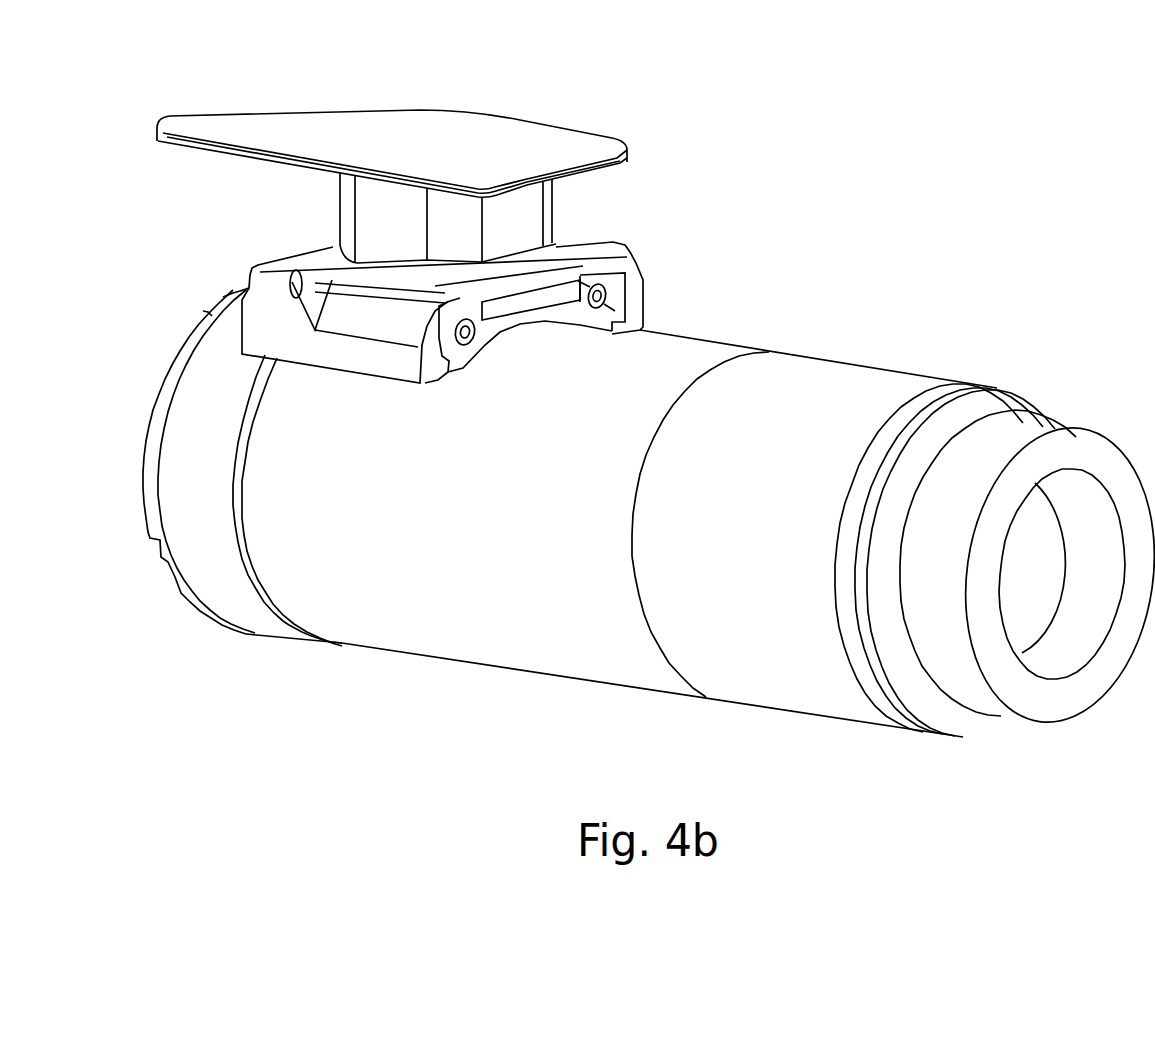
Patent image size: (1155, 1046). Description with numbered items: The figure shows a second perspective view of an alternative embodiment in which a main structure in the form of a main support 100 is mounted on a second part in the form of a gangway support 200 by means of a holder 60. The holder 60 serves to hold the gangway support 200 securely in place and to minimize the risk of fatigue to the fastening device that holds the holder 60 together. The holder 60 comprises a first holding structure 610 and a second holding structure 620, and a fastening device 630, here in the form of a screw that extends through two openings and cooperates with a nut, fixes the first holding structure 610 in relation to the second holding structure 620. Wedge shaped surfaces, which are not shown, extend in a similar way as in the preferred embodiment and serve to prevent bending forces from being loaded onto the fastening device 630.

The main support 100 is at (482, 670).
The gangway support 200 is at (632, 130).
The holder 60 is at (627, 252).
The first holding structure 610 is at (492, 335).
The second holding structure 620 is at (634, 298).
The fastening device 630 is at (636, 290).